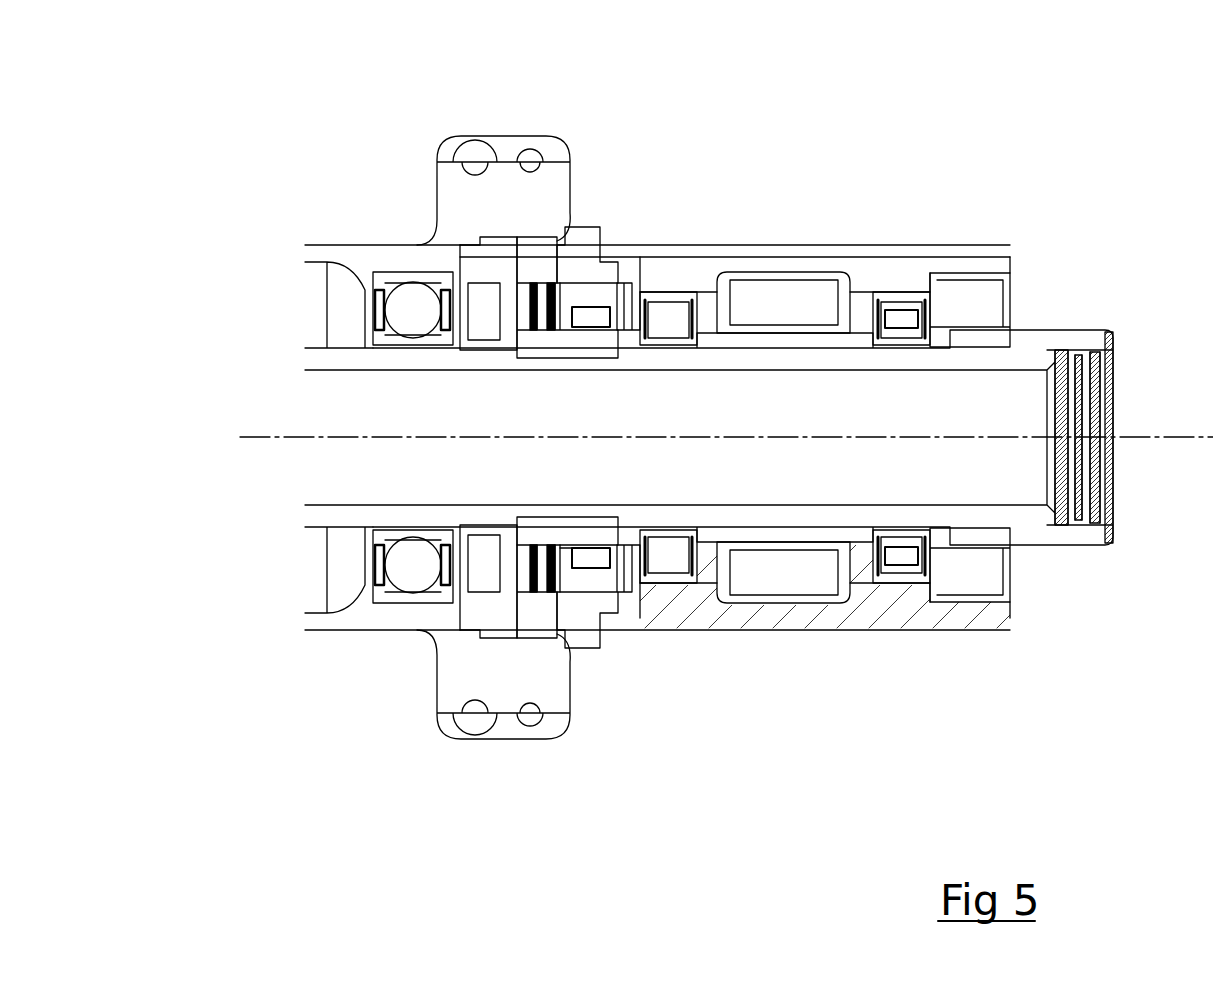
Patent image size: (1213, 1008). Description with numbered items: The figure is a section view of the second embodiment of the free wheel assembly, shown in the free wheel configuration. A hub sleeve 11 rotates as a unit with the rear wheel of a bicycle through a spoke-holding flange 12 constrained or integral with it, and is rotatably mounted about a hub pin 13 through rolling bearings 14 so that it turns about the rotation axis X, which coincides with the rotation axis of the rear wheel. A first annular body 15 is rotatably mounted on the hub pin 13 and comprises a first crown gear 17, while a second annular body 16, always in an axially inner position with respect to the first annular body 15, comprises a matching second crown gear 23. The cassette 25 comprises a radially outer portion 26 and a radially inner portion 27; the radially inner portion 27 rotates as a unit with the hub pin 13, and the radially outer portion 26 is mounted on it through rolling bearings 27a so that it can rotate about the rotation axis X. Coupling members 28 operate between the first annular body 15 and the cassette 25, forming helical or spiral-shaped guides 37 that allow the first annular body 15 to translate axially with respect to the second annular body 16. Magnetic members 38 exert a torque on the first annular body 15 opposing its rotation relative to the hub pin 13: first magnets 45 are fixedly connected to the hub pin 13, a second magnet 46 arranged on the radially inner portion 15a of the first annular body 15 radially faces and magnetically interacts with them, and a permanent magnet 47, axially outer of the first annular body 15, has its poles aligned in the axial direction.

The hub sleeve 11 is at (353, 257).
The spoke-holding flange 12 is at (460, 195).
The hub pin 13 is at (1037, 360).
The rolling bearings 14 is at (403, 567).
The first annular body 15 is at (580, 590).
The radially inner portion of the first annular body 15a is at (573, 552).
The second annular body 16 is at (508, 580).
The first crown gear 17 is at (552, 548).
The second crown gear 23 is at (528, 563).
The cassette 25 is at (741, 238).
The radially outer portion 26 is at (870, 267).
The radially inner portion 27 is at (948, 333).
The rolling bearings 27a is at (903, 307).
The coupling members 28 is at (614, 590).
The guides 37 is at (593, 318).
The magnetic members 38 is at (600, 553).
The first magnets 45 is at (560, 345).
The second magnet 46 is at (607, 290).
The permanent magnet 47 is at (624, 293).
The rotation axis X is at (1165, 433).